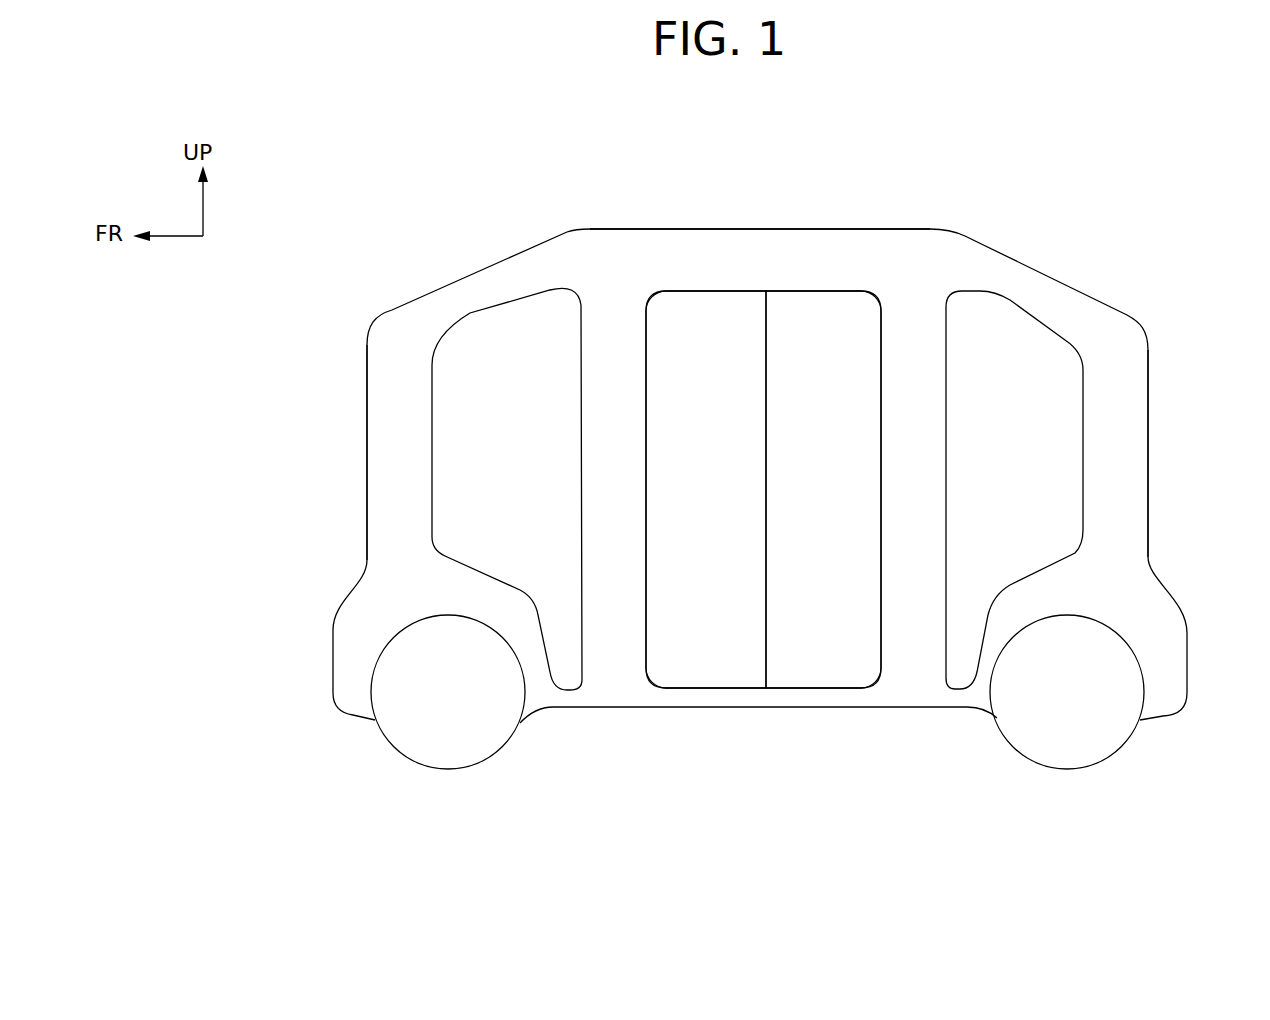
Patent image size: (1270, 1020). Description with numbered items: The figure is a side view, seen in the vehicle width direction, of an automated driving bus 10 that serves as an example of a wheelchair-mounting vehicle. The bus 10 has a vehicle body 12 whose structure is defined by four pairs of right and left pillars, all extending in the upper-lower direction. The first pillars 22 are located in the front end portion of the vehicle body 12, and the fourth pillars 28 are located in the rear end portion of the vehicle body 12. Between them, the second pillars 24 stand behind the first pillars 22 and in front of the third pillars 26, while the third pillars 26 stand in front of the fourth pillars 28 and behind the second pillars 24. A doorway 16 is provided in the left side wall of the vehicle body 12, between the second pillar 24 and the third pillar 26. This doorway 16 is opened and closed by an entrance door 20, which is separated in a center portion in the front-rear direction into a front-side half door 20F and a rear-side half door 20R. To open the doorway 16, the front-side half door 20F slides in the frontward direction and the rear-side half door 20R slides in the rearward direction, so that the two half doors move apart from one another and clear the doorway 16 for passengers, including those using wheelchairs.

The bus 10 is at (1002, 210).
The vehicle body 12 is at (800, 225).
The doorway 16 is at (646, 590).
The entrance door 20 is at (764, 572).
The front-side half door 20F is at (722, 643).
The rear-side half door 20R is at (833, 660).
The first pillar 22 is at (388, 435).
The second pillar 24 is at (597, 437).
The third pillar 26 is at (928, 438).
The fourth pillar 28 is at (1132, 437).